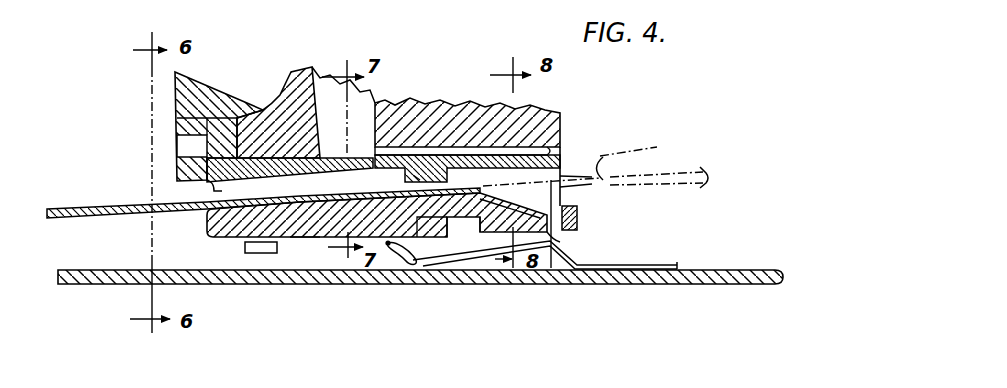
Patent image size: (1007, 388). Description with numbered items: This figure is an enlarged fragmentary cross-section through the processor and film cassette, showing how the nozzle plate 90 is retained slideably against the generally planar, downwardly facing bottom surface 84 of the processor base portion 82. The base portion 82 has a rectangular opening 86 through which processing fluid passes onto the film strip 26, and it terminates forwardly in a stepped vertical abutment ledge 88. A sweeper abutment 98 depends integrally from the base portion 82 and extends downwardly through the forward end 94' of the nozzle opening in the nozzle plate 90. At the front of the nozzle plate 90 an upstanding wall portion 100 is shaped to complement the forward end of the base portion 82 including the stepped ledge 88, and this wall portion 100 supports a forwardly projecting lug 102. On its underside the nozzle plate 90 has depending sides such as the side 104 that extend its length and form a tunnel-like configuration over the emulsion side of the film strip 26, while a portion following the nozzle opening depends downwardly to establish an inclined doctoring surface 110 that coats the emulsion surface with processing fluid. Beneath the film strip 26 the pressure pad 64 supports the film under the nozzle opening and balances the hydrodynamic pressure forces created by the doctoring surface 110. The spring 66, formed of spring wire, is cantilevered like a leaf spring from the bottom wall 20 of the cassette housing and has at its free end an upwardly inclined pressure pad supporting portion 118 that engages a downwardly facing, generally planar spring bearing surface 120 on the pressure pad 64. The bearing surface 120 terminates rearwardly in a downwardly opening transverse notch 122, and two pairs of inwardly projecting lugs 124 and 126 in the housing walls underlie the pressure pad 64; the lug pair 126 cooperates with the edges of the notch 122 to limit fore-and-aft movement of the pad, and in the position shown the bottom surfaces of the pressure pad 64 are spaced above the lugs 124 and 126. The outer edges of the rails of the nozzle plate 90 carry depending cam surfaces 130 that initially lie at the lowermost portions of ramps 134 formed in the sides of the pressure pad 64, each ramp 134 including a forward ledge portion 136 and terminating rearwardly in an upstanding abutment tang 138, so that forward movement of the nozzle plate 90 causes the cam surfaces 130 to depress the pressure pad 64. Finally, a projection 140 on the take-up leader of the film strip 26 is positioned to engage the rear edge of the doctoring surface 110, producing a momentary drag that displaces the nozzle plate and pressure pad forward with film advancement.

The bottom wall 20 is at (214, 286).
The film strip 26 is at (92, 206).
The pressure pad 64 is at (305, 244).
The spring 66 is at (457, 238).
The base portion 82 is at (480, 106).
The bottom surface 84 is at (561, 150).
The rectangular opening 86 is at (361, 146).
The stepped vertical abutment ledge 88 is at (240, 138).
The nozzle plate 90 is at (198, 193).
The forward end of the nozzle opening 94' is at (278, 94).
The sweeper abutment 98 is at (332, 158).
The upstanding wall portion 100 is at (178, 150).
The forwardly projecting lug 102 is at (180, 126).
The depending side 104 is at (187, 178).
The inclined doctoring surface 110 is at (414, 178).
The pressure pad supporting portion 118 is at (418, 264).
The spring bearing surface 120 is at (388, 247).
The transverse notch 122 is at (474, 225).
The inwardly projecting lugs 124 is at (268, 254).
The inwardly projecting lugs 126 is at (431, 238).
The depending cam surfaces 130 is at (541, 173).
The ramps 134 is at (553, 270).
The forward ledge portion 136 is at (554, 230).
The upstanding abutment tang 138 is at (578, 208).
The projection 140 is at (647, 146).